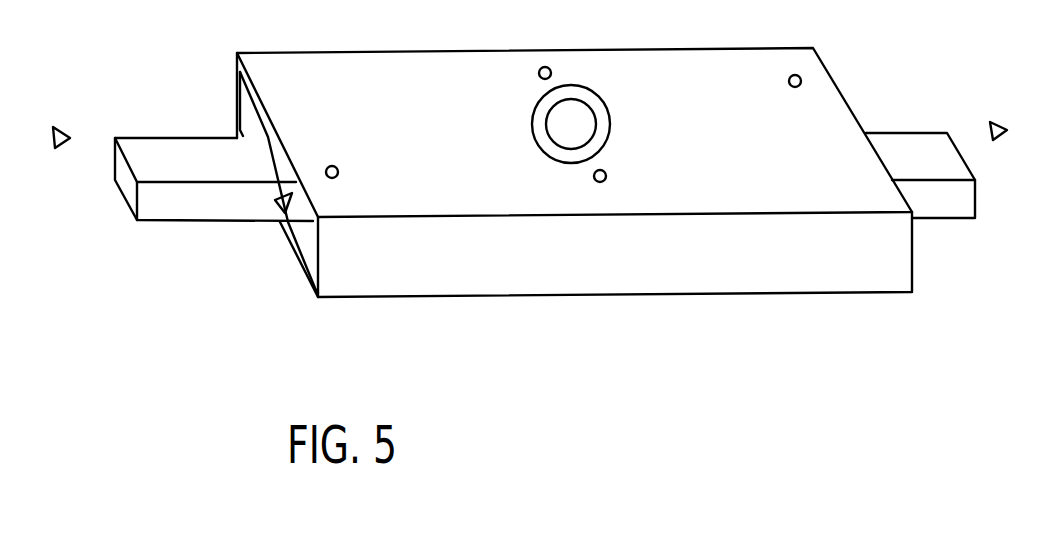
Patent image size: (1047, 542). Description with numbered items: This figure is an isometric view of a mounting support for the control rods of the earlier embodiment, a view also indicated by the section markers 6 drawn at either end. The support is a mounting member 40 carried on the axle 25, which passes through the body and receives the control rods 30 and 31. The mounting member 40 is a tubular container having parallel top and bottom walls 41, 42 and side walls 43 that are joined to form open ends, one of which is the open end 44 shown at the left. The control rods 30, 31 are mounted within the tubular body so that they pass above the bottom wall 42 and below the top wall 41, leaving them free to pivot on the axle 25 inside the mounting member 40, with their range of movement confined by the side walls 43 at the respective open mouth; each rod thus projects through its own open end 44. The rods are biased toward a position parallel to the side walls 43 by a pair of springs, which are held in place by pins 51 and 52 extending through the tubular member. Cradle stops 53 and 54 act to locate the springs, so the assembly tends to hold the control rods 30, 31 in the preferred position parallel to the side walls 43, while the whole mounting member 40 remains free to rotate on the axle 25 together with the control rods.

The section line 6- 6 is at (543, 156).
The axle 25 is at (558, 130).
The control rod 30 is at (162, 152).
The control rod 31 is at (966, 203).
The mounting member 40 is at (767, 282).
The top wall 41 is at (323, 217).
The bottom wall 42 is at (297, 257).
The side walls 43 is at (256, 118).
The open end 44 is at (273, 205).
The pin 51 is at (594, 180).
The pin 52 is at (539, 75).
The cradle stop 53 is at (340, 166).
The cradle stop 54 is at (789, 81).